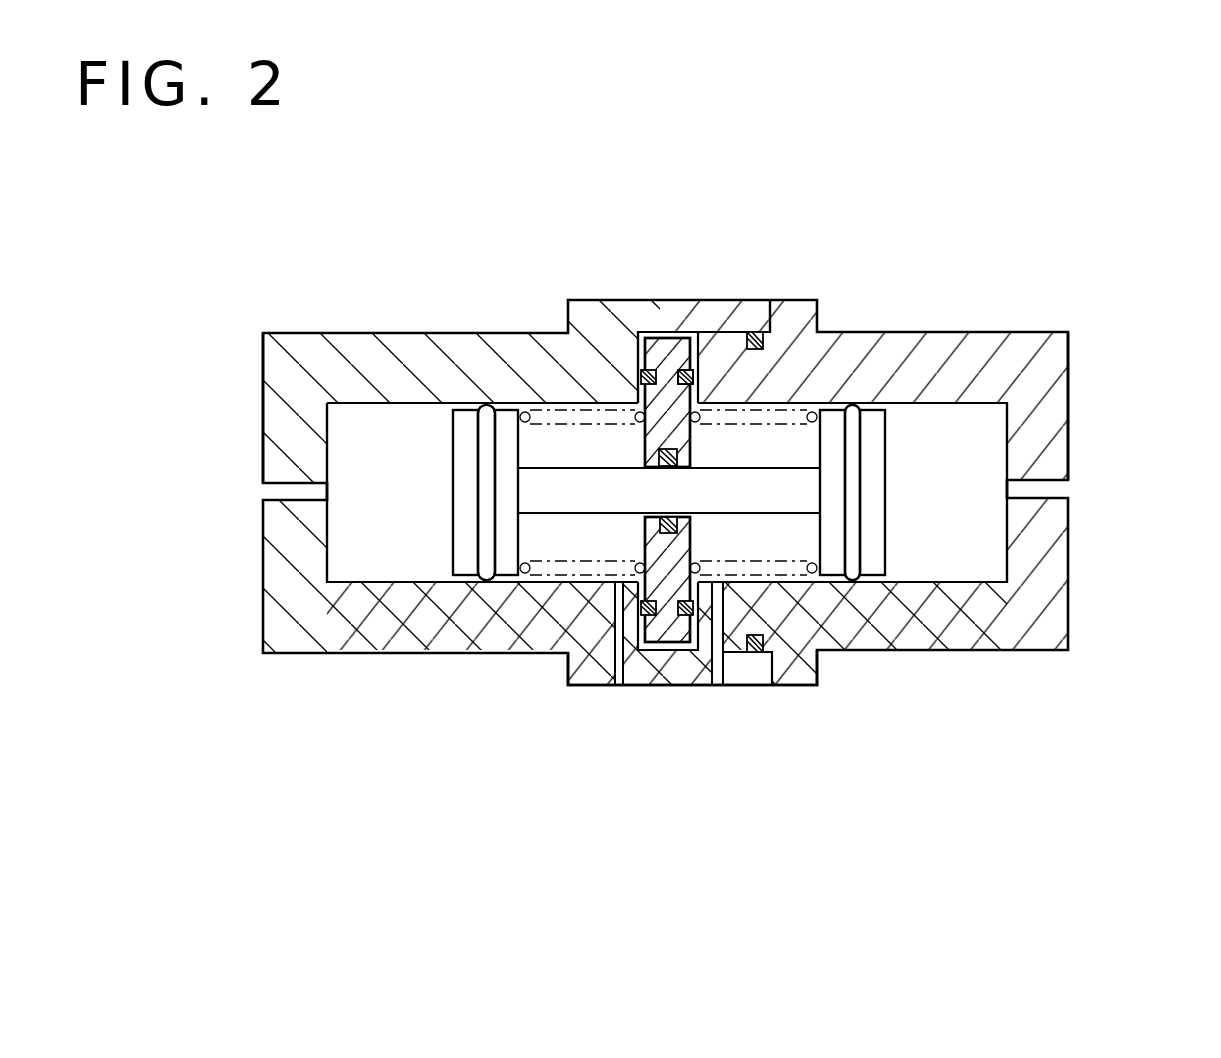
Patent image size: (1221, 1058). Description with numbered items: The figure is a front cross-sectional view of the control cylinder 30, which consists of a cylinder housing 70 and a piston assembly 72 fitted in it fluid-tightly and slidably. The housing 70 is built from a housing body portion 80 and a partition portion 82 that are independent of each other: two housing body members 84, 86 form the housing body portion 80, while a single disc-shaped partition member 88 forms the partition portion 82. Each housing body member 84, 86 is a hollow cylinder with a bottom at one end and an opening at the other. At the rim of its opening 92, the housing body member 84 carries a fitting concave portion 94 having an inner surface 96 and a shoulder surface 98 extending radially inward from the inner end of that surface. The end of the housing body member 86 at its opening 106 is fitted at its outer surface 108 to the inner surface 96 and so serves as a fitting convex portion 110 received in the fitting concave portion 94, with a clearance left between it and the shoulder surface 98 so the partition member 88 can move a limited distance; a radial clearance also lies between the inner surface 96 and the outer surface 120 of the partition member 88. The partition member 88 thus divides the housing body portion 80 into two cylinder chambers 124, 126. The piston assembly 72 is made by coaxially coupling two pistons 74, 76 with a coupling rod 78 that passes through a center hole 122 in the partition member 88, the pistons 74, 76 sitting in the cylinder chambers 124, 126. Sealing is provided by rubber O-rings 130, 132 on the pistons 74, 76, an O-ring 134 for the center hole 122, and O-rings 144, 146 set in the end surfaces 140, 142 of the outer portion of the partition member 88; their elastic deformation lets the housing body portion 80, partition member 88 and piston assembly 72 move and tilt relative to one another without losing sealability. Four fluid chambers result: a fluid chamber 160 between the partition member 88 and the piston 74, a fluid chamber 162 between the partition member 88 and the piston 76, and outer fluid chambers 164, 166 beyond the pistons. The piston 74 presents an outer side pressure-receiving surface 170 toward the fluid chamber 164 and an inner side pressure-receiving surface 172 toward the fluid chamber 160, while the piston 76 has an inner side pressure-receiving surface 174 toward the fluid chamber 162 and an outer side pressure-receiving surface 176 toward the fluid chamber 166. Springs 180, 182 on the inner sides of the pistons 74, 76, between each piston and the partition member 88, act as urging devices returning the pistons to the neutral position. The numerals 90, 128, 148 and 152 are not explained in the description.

The control cylinder 30 is at (578, 240).
The cylinder housing 70 is at (1008, 292).
The piston assembly 72 is at (875, 595).
The piston 74 is at (467, 418).
The piston 76 is at (870, 415).
The coupling rod 78 is at (580, 500).
The housing body portion 80 is at (410, 311).
The partition portion 82 is at (712, 538).
The housing body member 84 is at (300, 655).
The housing body member 86 is at (1023, 642).
The partition member 88 is at (640, 550).
The seal member 90 is at (743, 667).
The opening 92 is at (692, 463).
The fitting concave portion 94 is at (772, 685).
The inner surface 96 is at (665, 345).
The shoulder surface 98 is at (634, 340).
The opening 106 is at (723, 652).
The outer surface 108 is at (727, 387).
The fitting convex portion 110 is at (700, 345).
The outer surface 120 is at (688, 370).
The center hole 122 is at (766, 340).
The cylinder chamber 124 is at (297, 333).
The cylinder chamber 126 is at (1010, 400).
The spring 128 is at (382, 570).
The O-ring 130 is at (487, 578).
The O-ring 132 is at (860, 567).
The O-ring 134 is at (660, 520).
The end surface 140 is at (643, 607).
The end surface 142 is at (668, 643).
The O-ring 144 is at (640, 372).
The O-ring 146 is at (693, 375).
The recess bottom 148 is at (680, 652).
The seal member 152 is at (690, 640).
The fluid chamber 160 is at (562, 433).
The fluid chamber 162 is at (840, 403).
The fluid chamber 164 is at (372, 420).
The fluid chamber 166 is at (947, 420).
The outer side pressure-receiving surface 170 is at (447, 565).
The inner side pressure-receiving surface 172 is at (535, 573).
The inner side pressure-receiving surface 174 is at (812, 578).
The outer side pressure-receiving surface 176 is at (985, 580).
The spring 180 is at (500, 418).
The spring 182 is at (827, 577).